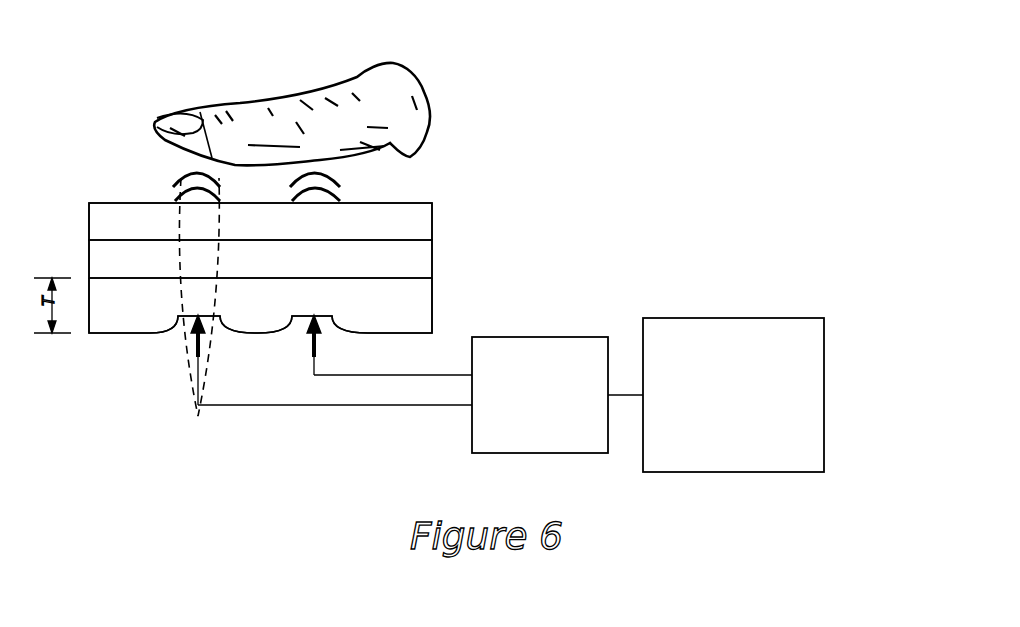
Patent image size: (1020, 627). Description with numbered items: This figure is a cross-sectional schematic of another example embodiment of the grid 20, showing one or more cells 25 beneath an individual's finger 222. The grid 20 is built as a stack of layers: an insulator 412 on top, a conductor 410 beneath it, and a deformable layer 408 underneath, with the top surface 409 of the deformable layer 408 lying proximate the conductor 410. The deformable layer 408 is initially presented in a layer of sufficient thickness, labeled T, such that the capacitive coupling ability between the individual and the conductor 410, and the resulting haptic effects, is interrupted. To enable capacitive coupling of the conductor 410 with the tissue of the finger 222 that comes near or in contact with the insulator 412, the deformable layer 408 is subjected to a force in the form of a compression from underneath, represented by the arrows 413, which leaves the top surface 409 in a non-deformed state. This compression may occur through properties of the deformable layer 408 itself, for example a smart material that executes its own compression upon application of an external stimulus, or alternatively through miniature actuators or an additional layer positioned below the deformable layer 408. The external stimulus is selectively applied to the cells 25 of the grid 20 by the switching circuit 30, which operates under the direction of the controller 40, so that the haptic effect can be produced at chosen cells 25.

The finger 222 is at (386, 92).
The cell 25 is at (176, 168).
The grid 20 is at (421, 194).
The insulator 412 is at (260, 221).
The conductor 410 is at (260, 259).
The top surface 409 is at (377, 278).
The deformable layer 408 is at (260, 305).
The arrows 413 is at (276, 360).
The switching circuit 30 is at (540, 395).
The controller 40 is at (733, 395).